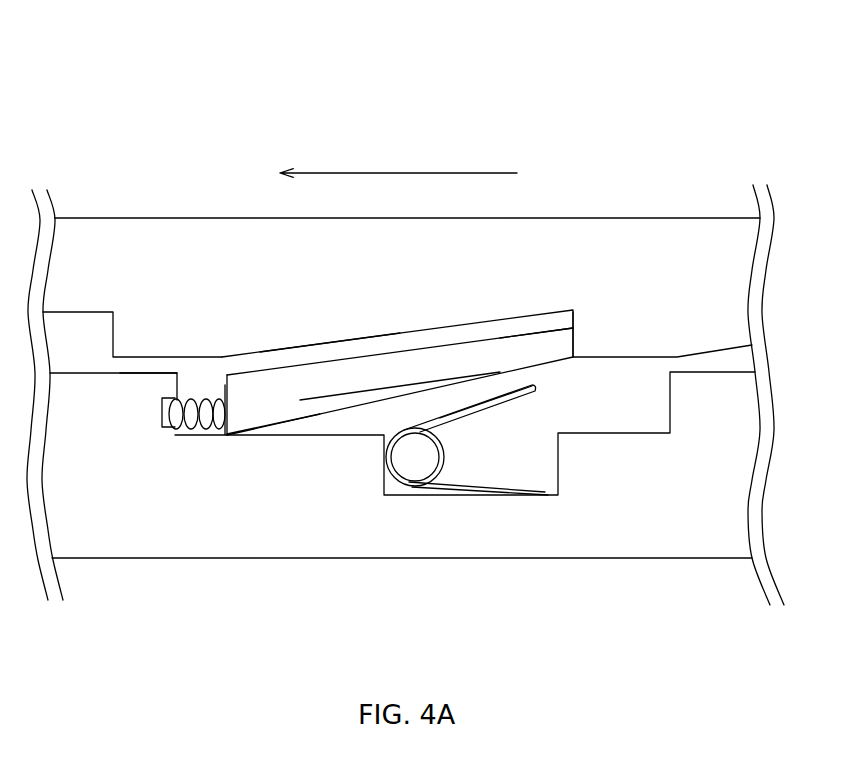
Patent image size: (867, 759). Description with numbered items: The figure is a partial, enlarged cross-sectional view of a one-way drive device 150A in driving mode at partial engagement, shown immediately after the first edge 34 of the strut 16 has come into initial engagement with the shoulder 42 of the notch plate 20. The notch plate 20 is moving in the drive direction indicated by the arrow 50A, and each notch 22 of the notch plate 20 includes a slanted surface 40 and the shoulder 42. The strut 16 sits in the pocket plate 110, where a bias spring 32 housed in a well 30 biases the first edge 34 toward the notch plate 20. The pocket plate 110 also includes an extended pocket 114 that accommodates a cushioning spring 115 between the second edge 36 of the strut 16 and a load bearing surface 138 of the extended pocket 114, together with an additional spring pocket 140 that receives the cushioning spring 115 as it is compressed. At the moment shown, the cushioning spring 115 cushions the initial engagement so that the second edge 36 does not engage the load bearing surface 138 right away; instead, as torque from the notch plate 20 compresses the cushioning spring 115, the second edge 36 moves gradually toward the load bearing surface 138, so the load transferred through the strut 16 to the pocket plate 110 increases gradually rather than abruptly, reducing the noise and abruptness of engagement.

The one-way drive device 150A is at (147, 158).
The arrow 50A is at (410, 172).
The notch plate 20 is at (598, 217).
The notch 22 is at (527, 310).
The slanted surface 40 is at (327, 342).
The shoulder 42 is at (575, 322).
The first edge 34 is at (572, 330).
The strut 16 is at (420, 388).
The second edge 36 is at (228, 422).
The well 30 is at (533, 442).
The bias spring 32 is at (448, 420).
The extended pocket 114 is at (590, 433).
The pocket plate 110 is at (550, 558).
The load bearing surface 138 is at (177, 379).
The spring pocket 140 is at (170, 428).
The cushioning spring 115 is at (192, 428).